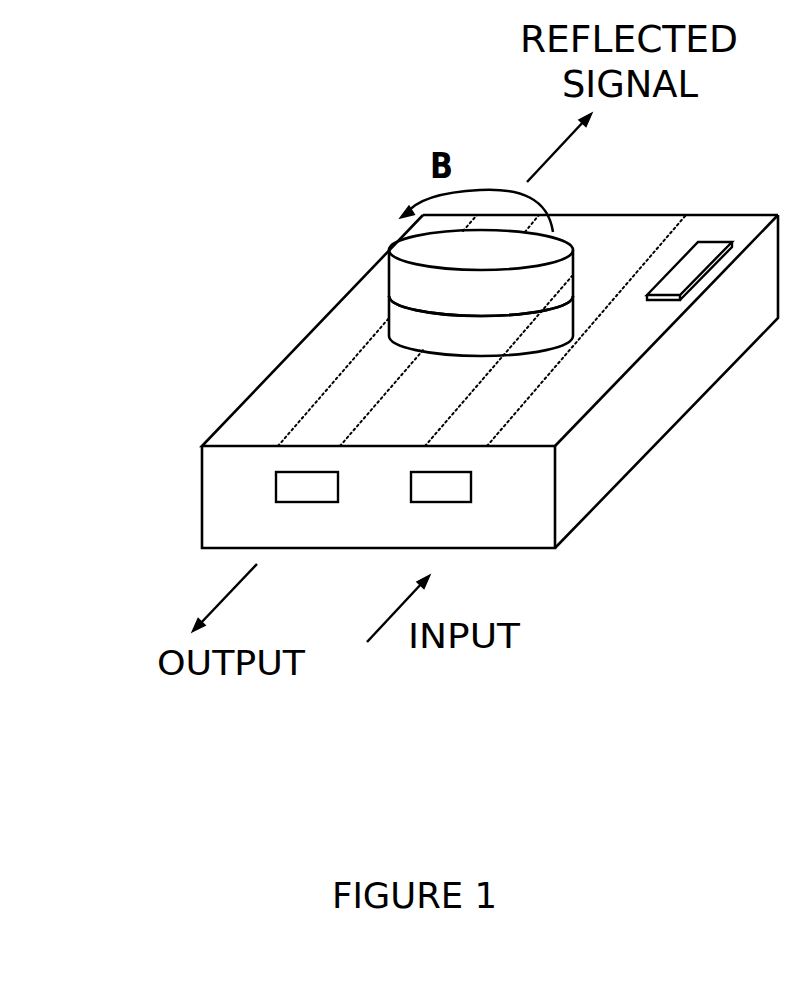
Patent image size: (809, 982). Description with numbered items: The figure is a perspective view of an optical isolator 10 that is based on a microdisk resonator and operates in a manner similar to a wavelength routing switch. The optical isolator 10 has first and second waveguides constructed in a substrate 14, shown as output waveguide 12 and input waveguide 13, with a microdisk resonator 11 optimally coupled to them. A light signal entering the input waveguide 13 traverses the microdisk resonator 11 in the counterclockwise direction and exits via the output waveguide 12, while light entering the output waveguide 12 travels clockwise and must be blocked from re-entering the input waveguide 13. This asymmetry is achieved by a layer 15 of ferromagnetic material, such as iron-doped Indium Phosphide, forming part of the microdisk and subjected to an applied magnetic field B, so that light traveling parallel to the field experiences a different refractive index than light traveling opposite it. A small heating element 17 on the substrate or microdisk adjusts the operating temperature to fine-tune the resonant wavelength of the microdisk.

The optical isolator 10 is at (153, 186).
The microdisk resonator 11 is at (571, 320).
The output waveguide 12 is at (332, 499).
The input waveguide 13 is at (460, 499).
The substrate 14 is at (695, 392).
The layer of ferromagnetic material 15 is at (392, 277).
The heating element 17 is at (698, 268).